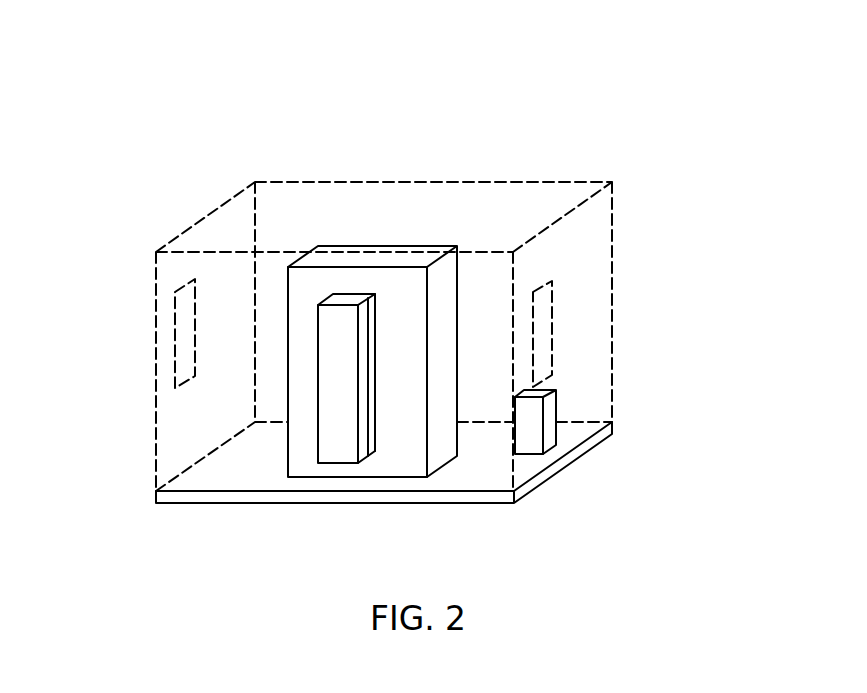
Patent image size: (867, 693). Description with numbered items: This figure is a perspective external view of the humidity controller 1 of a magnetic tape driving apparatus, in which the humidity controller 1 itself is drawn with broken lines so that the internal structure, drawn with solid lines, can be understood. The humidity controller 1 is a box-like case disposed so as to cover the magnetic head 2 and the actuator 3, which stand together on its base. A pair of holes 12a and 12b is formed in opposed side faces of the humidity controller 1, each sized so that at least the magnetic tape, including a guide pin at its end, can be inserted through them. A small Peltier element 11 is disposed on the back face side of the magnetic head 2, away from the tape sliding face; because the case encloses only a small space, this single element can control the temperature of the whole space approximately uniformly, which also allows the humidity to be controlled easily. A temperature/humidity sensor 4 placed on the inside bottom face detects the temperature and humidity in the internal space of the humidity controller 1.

The humidity controller 1 is at (513, 182).
The magnetic head 2 is at (340, 455).
The actuator 3 is at (407, 460).
The temperature/humidity sensor 4 is at (548, 434).
The Peltier element 11 is at (372, 452).
The hole 12a is at (174, 350).
The hole 12b is at (552, 320).